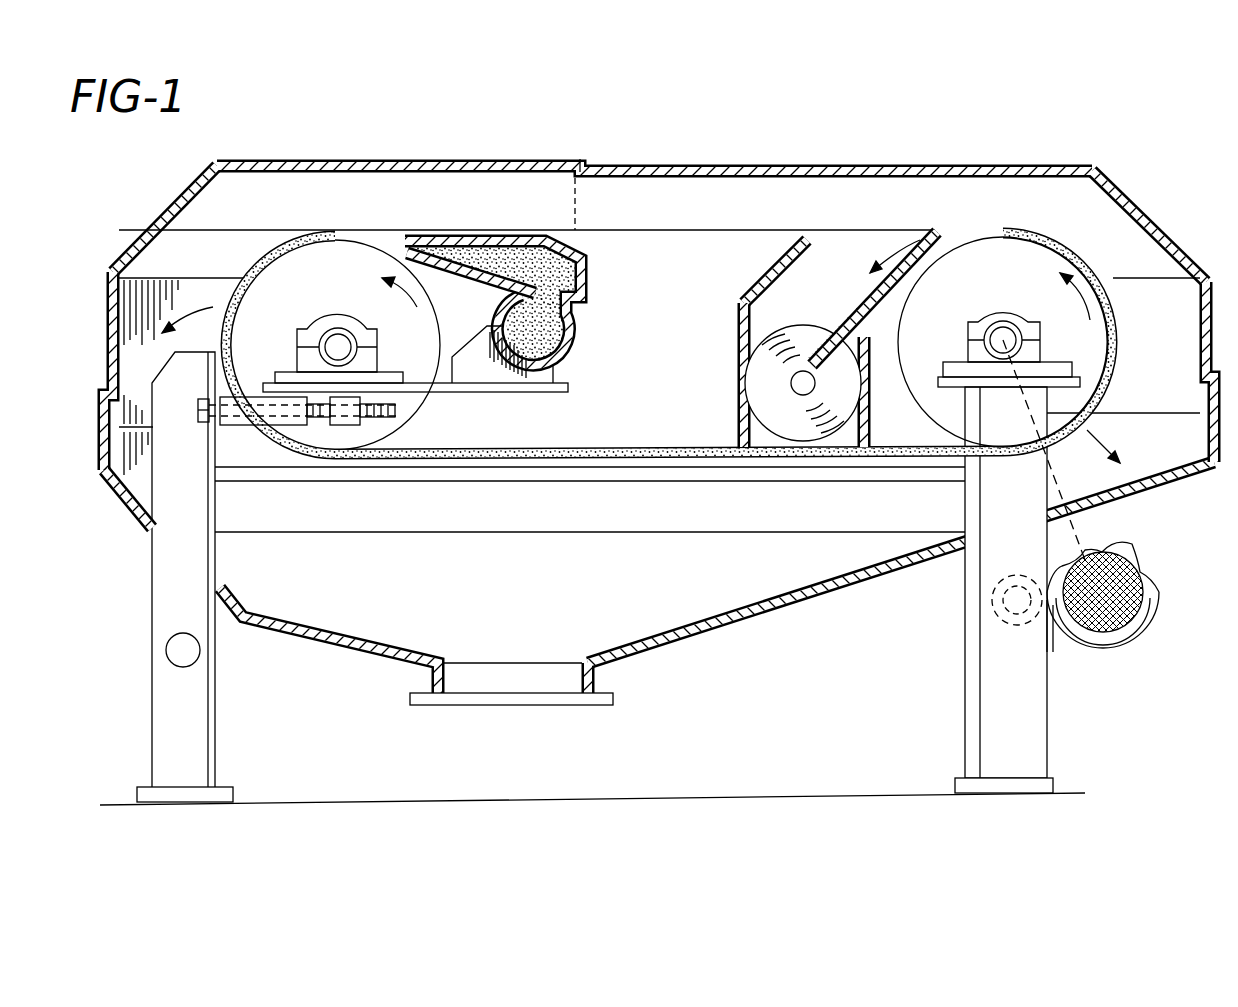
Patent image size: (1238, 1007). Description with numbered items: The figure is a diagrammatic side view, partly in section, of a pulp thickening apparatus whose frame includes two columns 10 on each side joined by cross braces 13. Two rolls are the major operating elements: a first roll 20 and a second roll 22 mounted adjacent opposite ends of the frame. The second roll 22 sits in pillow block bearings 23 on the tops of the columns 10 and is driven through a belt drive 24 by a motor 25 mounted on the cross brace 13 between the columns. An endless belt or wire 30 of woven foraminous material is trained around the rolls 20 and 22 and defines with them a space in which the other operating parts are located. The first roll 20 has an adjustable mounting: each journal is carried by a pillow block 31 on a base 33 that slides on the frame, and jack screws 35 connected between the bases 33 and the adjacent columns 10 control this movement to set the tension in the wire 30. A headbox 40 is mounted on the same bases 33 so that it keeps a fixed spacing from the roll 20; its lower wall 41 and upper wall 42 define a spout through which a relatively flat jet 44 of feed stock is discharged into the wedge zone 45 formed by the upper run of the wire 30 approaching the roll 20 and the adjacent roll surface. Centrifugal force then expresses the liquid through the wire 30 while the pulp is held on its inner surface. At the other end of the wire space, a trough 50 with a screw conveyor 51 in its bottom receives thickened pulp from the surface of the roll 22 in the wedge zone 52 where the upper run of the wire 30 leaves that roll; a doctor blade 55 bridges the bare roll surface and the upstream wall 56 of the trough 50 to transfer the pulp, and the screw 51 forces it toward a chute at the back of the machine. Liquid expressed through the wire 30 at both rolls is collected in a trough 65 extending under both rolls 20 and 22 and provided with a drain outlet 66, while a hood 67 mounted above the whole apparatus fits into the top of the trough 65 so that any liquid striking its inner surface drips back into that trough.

The columns 10 is at (158, 565).
The cross braces 13 is at (168, 650).
The first roll 20 is at (300, 250).
The second roll 22 is at (1050, 258).
The pillow block bearings 23 is at (968, 330).
The belt drive 24 is at (1073, 517).
The motor 25 is at (1132, 628).
The wire 30 is at (808, 228).
The pillow block 31 is at (330, 320).
The base 33 is at (545, 396).
The jack screws 35 is at (197, 416).
The headbox 40 is at (534, 269).
The lower wall 41 is at (490, 272).
The upper wall 42 is at (505, 238).
The jet 44 is at (395, 246).
The wedge zone 45 is at (365, 240).
The trough 50 is at (740, 336).
The screw conveyor 51 is at (748, 392).
The wedge zone 52 is at (937, 232).
The doctor blade 55 is at (897, 310).
The upstream wall 56 is at (770, 272).
The trough 65 is at (812, 608).
The drain outlet 66 is at (540, 680).
The hood 67 is at (581, 162).